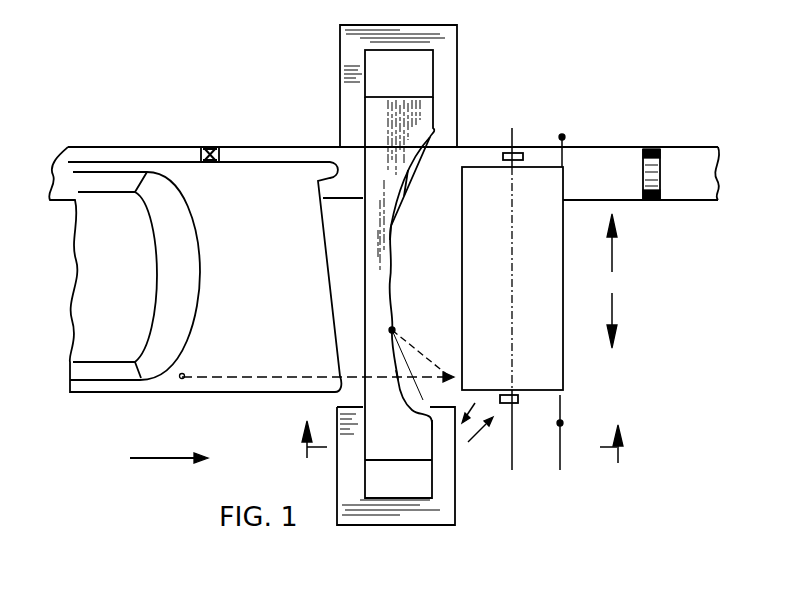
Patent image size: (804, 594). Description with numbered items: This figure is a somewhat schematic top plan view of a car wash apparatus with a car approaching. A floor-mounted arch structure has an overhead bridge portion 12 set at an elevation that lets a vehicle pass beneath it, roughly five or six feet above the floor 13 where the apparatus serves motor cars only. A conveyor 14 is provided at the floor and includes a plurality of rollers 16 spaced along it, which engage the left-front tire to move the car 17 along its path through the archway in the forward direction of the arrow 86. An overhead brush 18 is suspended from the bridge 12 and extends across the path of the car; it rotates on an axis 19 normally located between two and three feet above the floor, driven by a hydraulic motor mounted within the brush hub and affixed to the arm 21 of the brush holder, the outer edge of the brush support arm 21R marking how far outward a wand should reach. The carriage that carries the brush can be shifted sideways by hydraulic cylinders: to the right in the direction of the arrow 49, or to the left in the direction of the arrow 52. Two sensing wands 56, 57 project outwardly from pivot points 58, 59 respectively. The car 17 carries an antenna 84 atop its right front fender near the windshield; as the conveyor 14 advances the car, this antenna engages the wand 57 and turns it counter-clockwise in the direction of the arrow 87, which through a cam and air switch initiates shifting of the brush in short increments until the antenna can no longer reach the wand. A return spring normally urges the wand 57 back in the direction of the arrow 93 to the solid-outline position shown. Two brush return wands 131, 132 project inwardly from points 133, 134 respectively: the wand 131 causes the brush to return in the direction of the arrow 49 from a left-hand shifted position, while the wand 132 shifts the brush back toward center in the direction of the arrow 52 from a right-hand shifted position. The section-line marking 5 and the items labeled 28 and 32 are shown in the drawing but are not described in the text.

The section line 5- 5 is at (462, 442).
The overhead bridge portion 12 is at (343, 384).
The floor 13 is at (355, 350).
The conveyor 14 is at (626, 160).
The rollers 16 is at (212, 148).
The car 17 is at (238, 394).
The overhead brush 18 is at (551, 288).
The axis 19 is at (513, 466).
The arm 21 is at (513, 150).
The brush support arm 21R is at (517, 404).
The rod 28 is at (438, 126).
The housing 32 is at (364, 123).
The arrow 49 is at (614, 318).
The arrow 52 is at (614, 255).
The wand 56 is at (404, 196).
The wand 57 is at (408, 386).
The pivot point 58 is at (396, 228).
The pivot point 59 is at (395, 327).
The antenna 84 is at (180, 380).
The arrow 86 is at (169, 450).
The arrow 87 is at (468, 442).
The arrow 93 is at (475, 403).
The wand 131 is at (563, 408).
The wand 132 is at (565, 157).
The point 133 is at (560, 430).
The point 134 is at (563, 135).